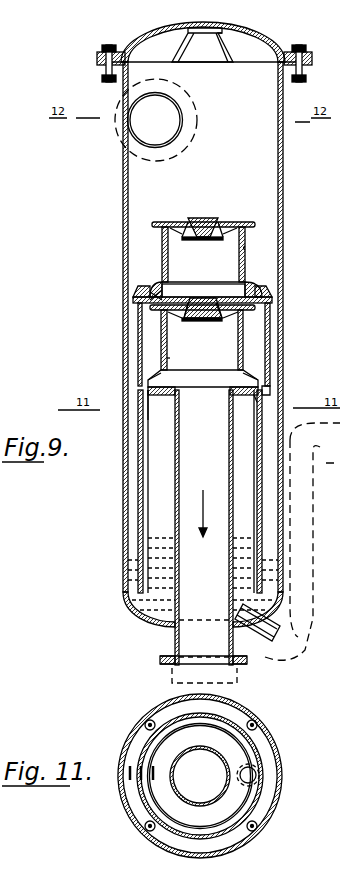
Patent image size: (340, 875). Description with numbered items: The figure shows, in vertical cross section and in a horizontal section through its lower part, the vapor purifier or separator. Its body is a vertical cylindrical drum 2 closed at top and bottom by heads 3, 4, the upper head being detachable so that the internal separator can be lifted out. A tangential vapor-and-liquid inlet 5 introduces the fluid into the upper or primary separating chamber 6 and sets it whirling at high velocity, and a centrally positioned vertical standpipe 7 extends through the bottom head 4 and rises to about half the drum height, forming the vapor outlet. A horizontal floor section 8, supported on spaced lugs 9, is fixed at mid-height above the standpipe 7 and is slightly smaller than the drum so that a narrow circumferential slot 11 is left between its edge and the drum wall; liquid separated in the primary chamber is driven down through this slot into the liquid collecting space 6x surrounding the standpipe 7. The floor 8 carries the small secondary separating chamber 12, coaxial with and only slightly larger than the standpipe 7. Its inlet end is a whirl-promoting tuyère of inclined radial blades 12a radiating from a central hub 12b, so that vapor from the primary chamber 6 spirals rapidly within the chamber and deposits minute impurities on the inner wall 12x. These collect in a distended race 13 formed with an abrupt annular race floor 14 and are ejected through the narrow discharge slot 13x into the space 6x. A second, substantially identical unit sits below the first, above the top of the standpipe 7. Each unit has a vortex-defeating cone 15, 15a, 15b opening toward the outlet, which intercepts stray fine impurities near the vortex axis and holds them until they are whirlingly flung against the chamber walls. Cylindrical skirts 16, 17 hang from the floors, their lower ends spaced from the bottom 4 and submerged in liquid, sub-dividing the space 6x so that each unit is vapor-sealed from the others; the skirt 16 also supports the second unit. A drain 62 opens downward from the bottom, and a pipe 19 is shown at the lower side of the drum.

In FIG. 9, the vertical cylindrical drum 2 is at (122, 188).
In FIG. 11, the vertical cylindrical drum 2 is at (282, 746).
In FIG. 9, the upper head 3 is at (255, 33).
In FIG. 9, the bottom head 4 is at (146, 613).
In FIG. 9, the vapor-and-liquid inlet 5 is at (145, 138).
In FIG. 9, the primary separating chamber 6 is at (169, 165).
In FIG. 9, the liquid collecting space 6x is at (160, 497).
In FIG. 11, the liquid collecting space 6x is at (235, 832).
In FIG. 9, the outlet opening 62 is at (237, 679).
In FIG. 9, the standpipe 7 is at (180, 428).
In FIG. 11, the standpipe 7 is at (173, 778).
In FIG. 9, the horizontal floor section 8 is at (132, 297).
In FIG. 11, the spaced lugs 9 is at (258, 728).
In FIG. 9, the circumferential slot 11 is at (137, 314).
In FIG. 9, the secondary separating chamber 12 is at (203, 252).
In FIG. 9, the inclined radial blades 12a is at (227, 228).
In FIG. 9, the hub 12b is at (210, 218).
In FIG. 9, the inner wall 12x is at (246, 250).
In FIG. 9, the race 13 is at (250, 284).
In FIG. 9, the discharge slot 13x is at (156, 290).
In FIG. 9, the race floor 14 is at (242, 300).
In FIG. 9, the vortex-defeating cone 15 is at (202, 45).
In FIG. 9, the vortex-defeating cone 15a is at (213, 241).
In FIG. 9, the vortex-defeating cone 15b is at (200, 322).
In FIG. 9, the cylindrical skirt 16 is at (138, 352).
In FIG. 11, the cylindrical skirt 16 is at (263, 790).
In FIG. 9, the cylindrical skirt 17 is at (150, 455).
In FIG. 11, the cylindrical skirt 17 is at (254, 806).
In FIG. 9, the drain pipe 19 is at (268, 619).
In FIG. 11, the drain pipe 19 is at (257, 775).